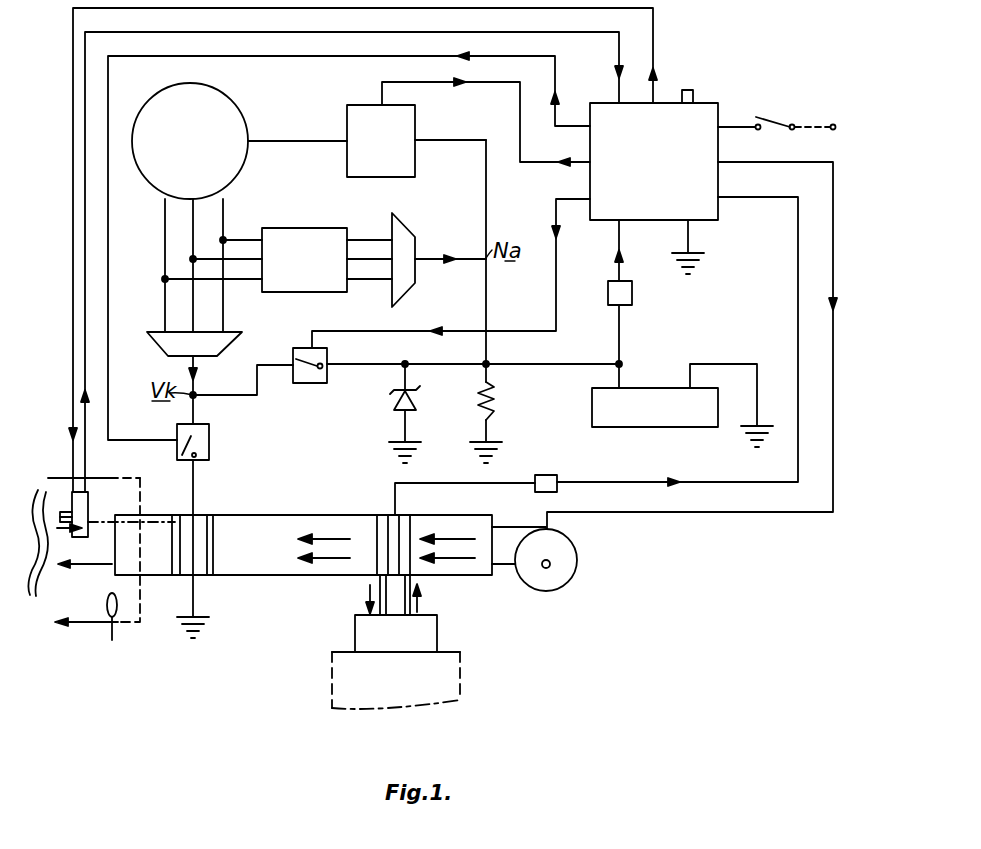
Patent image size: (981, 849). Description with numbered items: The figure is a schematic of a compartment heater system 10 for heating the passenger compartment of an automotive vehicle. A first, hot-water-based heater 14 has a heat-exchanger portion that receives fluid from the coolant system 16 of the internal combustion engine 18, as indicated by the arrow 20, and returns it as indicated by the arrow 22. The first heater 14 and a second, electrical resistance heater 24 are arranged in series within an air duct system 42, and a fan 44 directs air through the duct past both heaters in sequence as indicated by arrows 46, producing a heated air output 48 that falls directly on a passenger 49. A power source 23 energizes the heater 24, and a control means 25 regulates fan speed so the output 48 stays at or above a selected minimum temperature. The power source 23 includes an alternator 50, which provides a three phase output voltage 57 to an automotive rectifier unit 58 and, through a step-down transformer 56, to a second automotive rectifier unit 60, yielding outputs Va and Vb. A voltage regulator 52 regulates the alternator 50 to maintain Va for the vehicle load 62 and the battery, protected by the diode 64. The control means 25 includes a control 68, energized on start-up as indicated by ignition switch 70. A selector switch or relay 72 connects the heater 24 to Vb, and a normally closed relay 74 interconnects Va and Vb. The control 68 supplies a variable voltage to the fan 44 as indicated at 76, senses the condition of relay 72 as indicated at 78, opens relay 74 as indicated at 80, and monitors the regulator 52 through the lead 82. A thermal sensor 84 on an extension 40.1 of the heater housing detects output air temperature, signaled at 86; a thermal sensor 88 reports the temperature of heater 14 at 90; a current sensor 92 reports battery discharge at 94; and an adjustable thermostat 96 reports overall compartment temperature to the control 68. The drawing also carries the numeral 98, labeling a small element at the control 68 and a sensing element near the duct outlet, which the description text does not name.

The compartment heater system 10 is at (722, 84).
The hot-water-based heater 14 is at (377, 545).
The coolant system 16 is at (425, 638).
The internal combustion engine 18 is at (442, 682).
The arrow 20 is at (364, 597).
The arrow 22 is at (422, 592).
The power source 23 is at (692, 337).
The electrical resistance heater 24 is at (217, 558).
The control means 25 is at (728, 102).
The extension of the heater housing 40.1 is at (162, 510).
The air duct system 42 is at (285, 575).
The fan 44 is at (558, 576).
The arrows indicating air 46 is at (338, 560).
The heated air output 48 is at (100, 538).
The passenger 49 is at (36, 492).
The alternator 50 is at (232, 120).
The voltage regulator 52 is at (362, 107).
The step-down transformer 56 is at (306, 294).
The three phase output voltage 57 is at (165, 237).
The automotive rectifier unit 58 is at (232, 352).
The automotive rectifier unit 60 is at (410, 290).
The vehicle load 62 is at (496, 394).
The diode 64 is at (394, 403).
The control 68 is at (718, 208).
The ignition switch 70 is at (778, 122).
The selector switch or relay 72 is at (210, 446).
The normally closed relay 74 is at (312, 386).
The variable voltage to the fan 76 is at (835, 292).
The selector switch condition sensing 78 is at (110, 410).
The relay opening signal 80 is at (403, 332).
The lead 82 is at (442, 82).
The thermal sensor 84 is at (88, 504).
The air output temperature signal 86 is at (88, 440).
The thermal sensor 88 is at (546, 475).
The heater temperature signal 90 is at (614, 482).
The current sensor 92 is at (632, 300).
The battery discharge signal 94 is at (616, 270).
The adjustable thermostat 96 is at (118, 601).
The terminal 98 is at (708, 62).